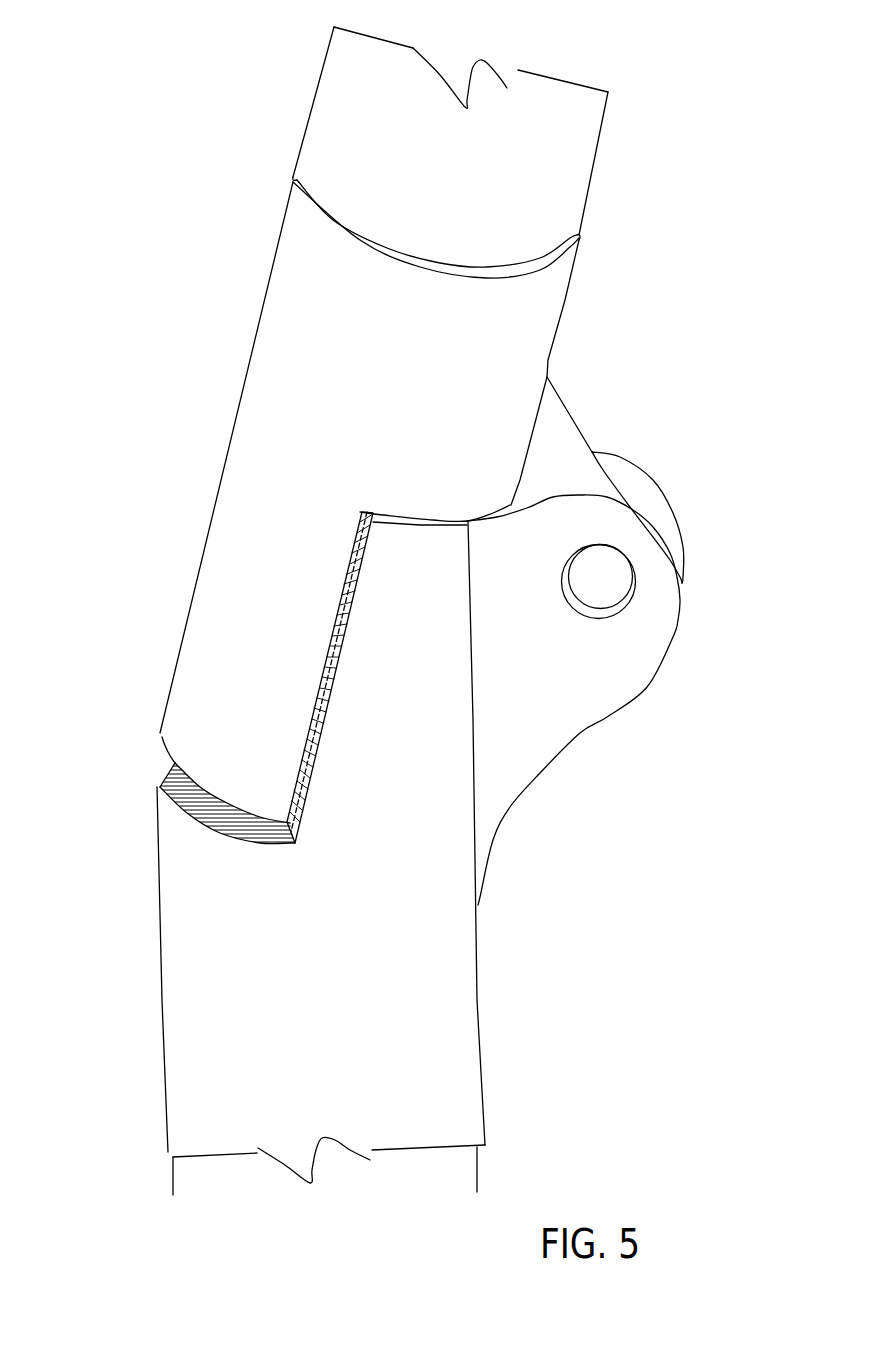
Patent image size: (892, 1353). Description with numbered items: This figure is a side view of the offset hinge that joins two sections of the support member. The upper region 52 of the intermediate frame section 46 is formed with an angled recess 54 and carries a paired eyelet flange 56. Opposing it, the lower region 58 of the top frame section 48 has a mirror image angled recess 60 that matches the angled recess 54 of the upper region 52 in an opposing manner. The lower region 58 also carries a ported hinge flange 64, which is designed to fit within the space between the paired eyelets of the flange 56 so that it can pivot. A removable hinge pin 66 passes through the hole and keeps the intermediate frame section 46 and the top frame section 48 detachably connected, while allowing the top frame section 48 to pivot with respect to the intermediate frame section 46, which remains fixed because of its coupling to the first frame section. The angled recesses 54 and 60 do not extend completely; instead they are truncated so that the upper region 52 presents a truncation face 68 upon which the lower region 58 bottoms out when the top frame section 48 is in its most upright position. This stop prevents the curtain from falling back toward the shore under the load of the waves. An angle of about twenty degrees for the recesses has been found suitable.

The intermediate frame section 46 is at (305, 1108).
The top frame section 48 is at (465, 182).
The upper region 52 is at (425, 692).
The angled recess 54 is at (345, 634).
The paired eyelet flange 56 is at (575, 684).
The lower region 58 is at (257, 667).
The mirror image angled recess 60 is at (303, 737).
The ported hinge flange 64 is at (562, 440).
The removable hinge pin 66 is at (607, 587).
The truncation face 68 is at (175, 765).